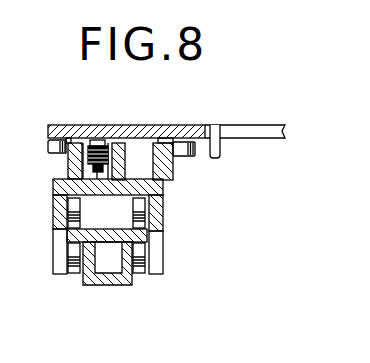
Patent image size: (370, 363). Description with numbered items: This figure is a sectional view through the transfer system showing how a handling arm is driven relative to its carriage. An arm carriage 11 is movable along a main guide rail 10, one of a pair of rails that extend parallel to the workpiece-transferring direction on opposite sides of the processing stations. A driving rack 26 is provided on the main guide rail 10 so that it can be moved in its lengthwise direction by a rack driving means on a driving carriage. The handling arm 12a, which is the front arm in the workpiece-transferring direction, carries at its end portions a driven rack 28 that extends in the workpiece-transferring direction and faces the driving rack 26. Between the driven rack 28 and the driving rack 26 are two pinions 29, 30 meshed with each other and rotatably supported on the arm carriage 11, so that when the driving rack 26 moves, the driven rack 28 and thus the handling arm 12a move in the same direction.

The main guide rail 10 is at (112, 285).
The arm carriage 11 is at (160, 207).
The handling arm 12a is at (155, 113).
The driving rack 26 is at (118, 167).
The driven rack 28 is at (89, 143).
The pinion 29 is at (104, 147).
The pinion 30 is at (68, 167).